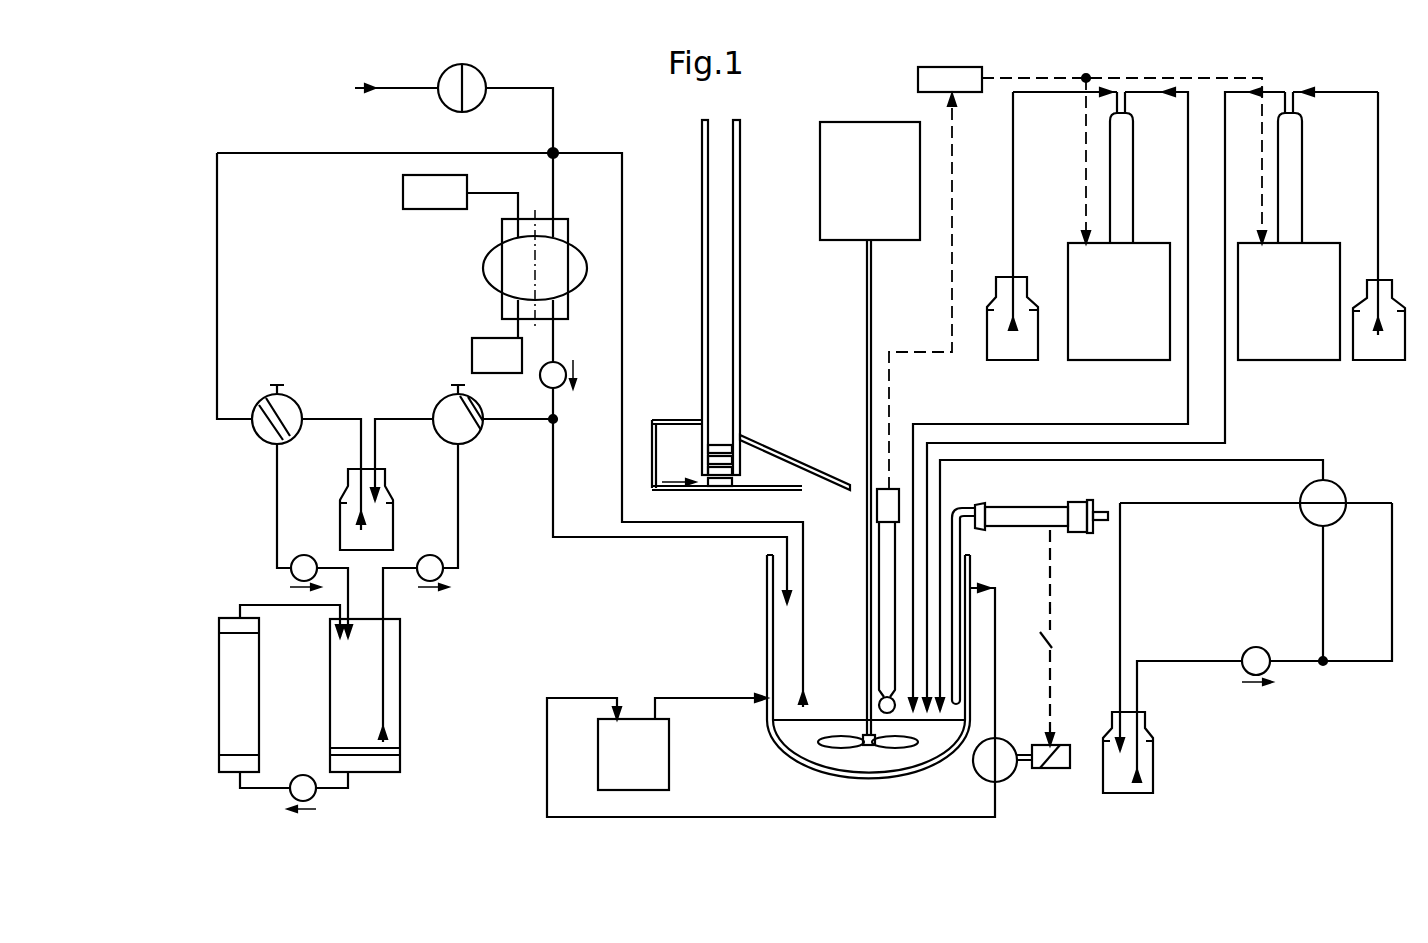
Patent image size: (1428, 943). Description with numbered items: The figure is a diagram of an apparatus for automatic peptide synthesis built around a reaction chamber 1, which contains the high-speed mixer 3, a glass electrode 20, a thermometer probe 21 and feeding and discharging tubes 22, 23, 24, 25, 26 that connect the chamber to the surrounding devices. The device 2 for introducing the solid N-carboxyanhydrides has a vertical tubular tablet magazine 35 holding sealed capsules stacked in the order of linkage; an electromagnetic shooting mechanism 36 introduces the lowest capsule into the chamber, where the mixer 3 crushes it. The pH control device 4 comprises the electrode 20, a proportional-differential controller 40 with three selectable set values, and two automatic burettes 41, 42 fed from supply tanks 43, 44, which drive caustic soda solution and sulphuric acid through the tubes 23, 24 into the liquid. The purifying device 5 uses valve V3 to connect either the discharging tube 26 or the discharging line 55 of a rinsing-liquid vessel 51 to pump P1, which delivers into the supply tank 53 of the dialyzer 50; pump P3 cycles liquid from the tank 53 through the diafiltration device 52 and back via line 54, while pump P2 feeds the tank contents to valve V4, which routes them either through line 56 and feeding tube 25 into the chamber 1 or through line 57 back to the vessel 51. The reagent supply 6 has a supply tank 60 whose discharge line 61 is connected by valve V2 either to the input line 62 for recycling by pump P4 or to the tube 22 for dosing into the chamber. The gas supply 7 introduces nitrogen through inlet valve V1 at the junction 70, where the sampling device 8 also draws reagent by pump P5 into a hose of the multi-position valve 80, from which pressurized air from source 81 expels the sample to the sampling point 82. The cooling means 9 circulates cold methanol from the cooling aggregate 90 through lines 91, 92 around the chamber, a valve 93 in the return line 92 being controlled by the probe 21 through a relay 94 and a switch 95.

The reaction chamber 1 is at (775, 745).
The device for introducing the solid N-carboxyanhydrides 2 is at (751, 305).
The mixer 3 is at (879, 199).
The device for controlling the pH value 4 is at (1287, 83).
The device for purifying the high molecular end-product 5 is at (457, 587).
The supply for liquid reagents 6 is at (1240, 604).
The gas supply 7 is at (355, 88).
The sampling device 8 is at (483, 272).
The cooling means 9 is at (1008, 790).
The glass electrode 20 is at (880, 646).
The thermometer probe 21 is at (1005, 530).
The tube 22 is at (940, 600).
The tube 23 is at (927, 575).
The tube 24 is at (913, 540).
The feeding tube 25 is at (787, 548).
The discharging tube 26 is at (803, 625).
The tubular tablet magazine 35 is at (745, 243).
The electromagnetic shooting mechanism 36 is at (687, 456).
The proportional-differential controller 40 is at (918, 78).
The automatic burette 41 is at (1135, 309).
The automatic burette 42 is at (1305, 309).
The supply tank 43 is at (1010, 362).
The supply tank 44 is at (1378, 362).
The dialyzer 50 is at (306, 717).
The vessel 51 is at (395, 512).
The diafiltration device 52 is at (222, 618).
The supply tank 53 is at (400, 657).
The line 54 is at (290, 606).
The discharging line 55 is at (322, 424).
The line 56 is at (516, 424).
The line 57 is at (408, 424).
The supply tank 60 is at (1153, 758).
The discharge line 61 is at (1190, 663).
The input line 62 is at (1121, 574).
The junction 70 is at (556, 150).
The valve 80 is at (502, 306).
The pressurized-air source 81 is at (472, 355).
The sampling point 82 is at (403, 193).
The cooling aggregate 90 is at (598, 752).
The line 91 is at (696, 698).
The return line 92 is at (688, 817).
The valve 93 is at (976, 778).
The relay 94 is at (1060, 770).
The switch 95 is at (1055, 642).
The inlet valve V1 is at (460, 112).
The valve V2 is at (1346, 496).
The valve V3 is at (292, 398).
The valve V4 is at (435, 403).
The peristaltic pump P1 is at (306, 555).
The peristaltic pump P2 is at (425, 555).
The peristaltic pump P3 is at (300, 775).
The peristaltic pump P4 is at (1268, 650).
The peristaltic pump P5 is at (565, 362).